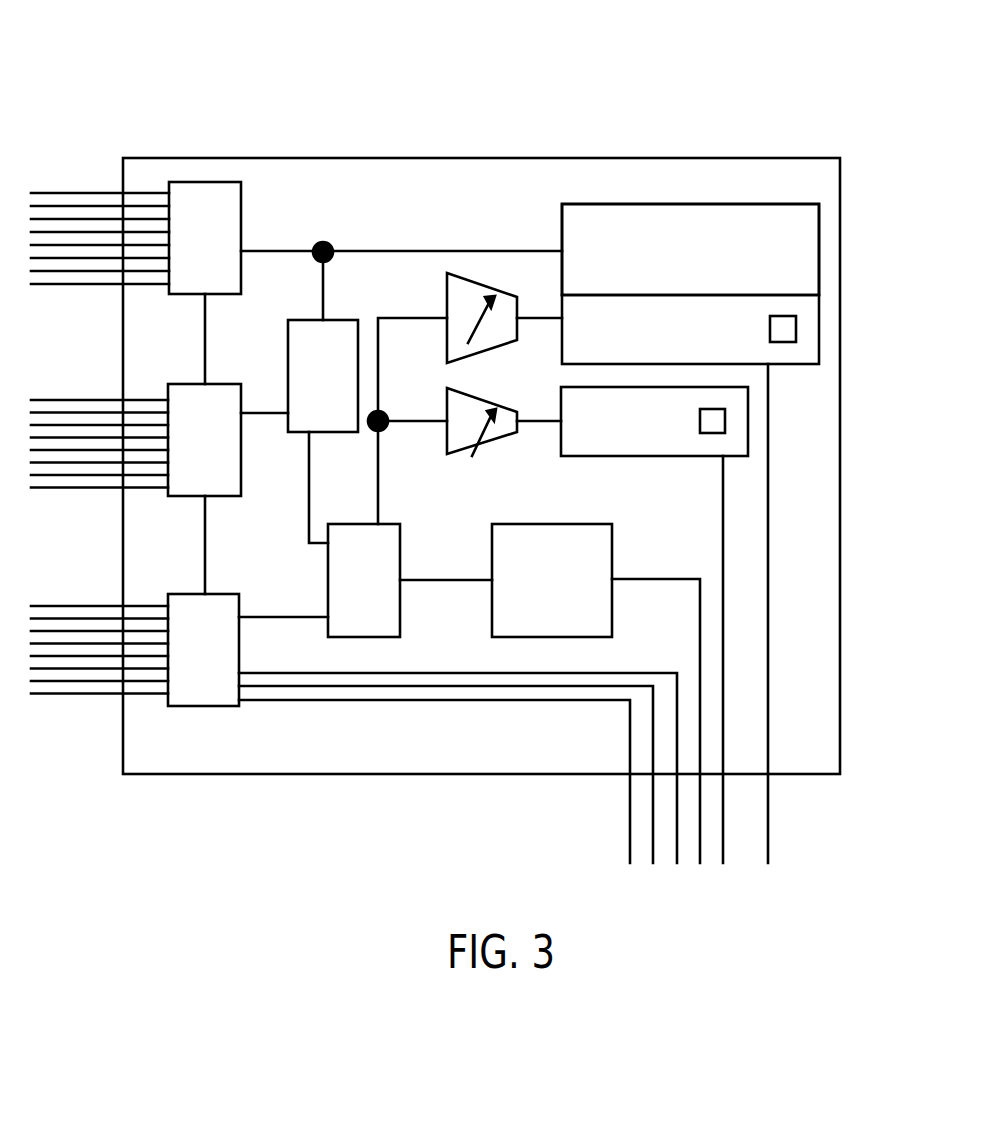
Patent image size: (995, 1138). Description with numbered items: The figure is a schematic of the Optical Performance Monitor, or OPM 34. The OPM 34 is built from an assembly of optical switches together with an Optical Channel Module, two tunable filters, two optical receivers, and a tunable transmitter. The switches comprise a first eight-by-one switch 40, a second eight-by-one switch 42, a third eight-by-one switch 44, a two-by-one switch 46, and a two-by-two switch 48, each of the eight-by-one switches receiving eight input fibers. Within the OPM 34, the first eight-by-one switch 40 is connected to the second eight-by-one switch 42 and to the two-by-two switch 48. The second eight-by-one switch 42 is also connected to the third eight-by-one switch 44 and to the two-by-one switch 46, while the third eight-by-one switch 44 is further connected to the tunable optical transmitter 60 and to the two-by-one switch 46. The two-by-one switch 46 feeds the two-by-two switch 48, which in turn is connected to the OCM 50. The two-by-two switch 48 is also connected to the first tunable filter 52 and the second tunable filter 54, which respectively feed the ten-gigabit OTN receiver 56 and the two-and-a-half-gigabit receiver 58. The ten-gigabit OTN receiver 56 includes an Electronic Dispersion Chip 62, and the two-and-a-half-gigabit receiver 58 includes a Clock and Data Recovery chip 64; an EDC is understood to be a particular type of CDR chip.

The Optical Performance Monitor 34 is at (230, 88).
The first 8×1 switch 40 is at (220, 706).
The second 8×1 switch 42 is at (218, 496).
The third 8×1 switch 44 is at (219, 294).
The 2×1 switch 46 is at (302, 320).
The 2×2 switch 48 is at (358, 524).
The Optical Channel Module 50 is at (612, 546).
The first tunable filter 52 is at (447, 288).
The second tunable filter 54 is at (460, 454).
The 10G OTN receiver 56 is at (730, 533).
The 2.5G receiver 58 is at (729, 625).
The tunable optical transmitter 60 is at (819, 232).
The Electronic Dispersion Chip 62 is at (796, 329).
The Clock and Data Recovery chip 64 is at (725, 421).